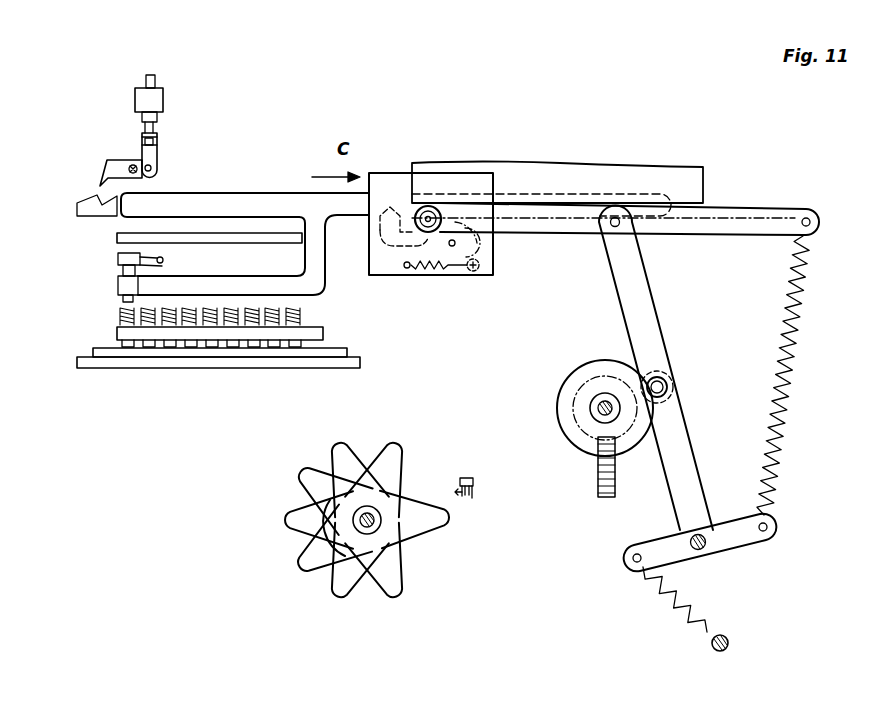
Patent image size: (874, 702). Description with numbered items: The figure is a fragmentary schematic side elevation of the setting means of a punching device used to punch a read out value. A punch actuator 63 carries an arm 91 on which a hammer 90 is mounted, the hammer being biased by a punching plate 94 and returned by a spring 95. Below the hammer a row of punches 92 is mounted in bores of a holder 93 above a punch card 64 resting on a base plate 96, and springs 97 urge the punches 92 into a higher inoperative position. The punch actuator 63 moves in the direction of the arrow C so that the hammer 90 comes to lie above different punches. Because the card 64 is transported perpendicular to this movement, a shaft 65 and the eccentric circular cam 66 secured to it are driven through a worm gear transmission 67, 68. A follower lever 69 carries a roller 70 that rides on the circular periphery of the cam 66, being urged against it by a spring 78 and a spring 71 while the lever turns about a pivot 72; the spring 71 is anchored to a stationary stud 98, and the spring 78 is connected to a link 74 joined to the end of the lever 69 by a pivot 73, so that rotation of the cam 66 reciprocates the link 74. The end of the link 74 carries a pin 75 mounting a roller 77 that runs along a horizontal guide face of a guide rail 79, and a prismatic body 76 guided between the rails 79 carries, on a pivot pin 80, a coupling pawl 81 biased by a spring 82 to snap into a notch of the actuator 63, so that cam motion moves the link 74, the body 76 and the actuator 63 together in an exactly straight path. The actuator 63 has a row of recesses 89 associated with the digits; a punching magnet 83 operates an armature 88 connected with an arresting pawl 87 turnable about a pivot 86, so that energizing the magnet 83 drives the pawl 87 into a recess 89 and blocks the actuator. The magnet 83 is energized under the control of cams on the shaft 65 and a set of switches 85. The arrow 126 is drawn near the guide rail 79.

The punch actuator 63 is at (293, 202).
The punch card 64 is at (307, 350).
The shaft 65 is at (358, 525).
The eccentric circular cam 66 is at (563, 425).
The worm gear transmission 67 is at (598, 492).
The worm gear transmission 68 is at (600, 380).
The follower lever 69 is at (673, 442).
The roller 70 is at (673, 380).
The spring 71 is at (683, 602).
The pivot 72 is at (707, 545).
The pivot 73 is at (624, 226).
The link 74 is at (780, 218).
The axle 75 is at (430, 218).
The prismatic body 76 is at (377, 183).
The roller 77 is at (417, 203).
The spring 78 is at (792, 335).
The guide rail 79 is at (695, 180).
The pivot pin 80 is at (450, 245).
The coupling pawl 81 is at (478, 255).
The spring 82 is at (453, 267).
The punching magnet 83 is at (150, 97).
The switch 85 is at (463, 478).
The pivot 86 is at (131, 166).
The arresting pawl 87 is at (107, 172).
The armature 88 is at (157, 157).
The recess 89 is at (97, 194).
The hammer 90 is at (120, 258).
The arm 91 is at (213, 282).
The punch 92 is at (170, 338).
The holder 93 is at (127, 331).
The punching plate 94 is at (187, 232).
The spring 95 is at (163, 266).
The base plate 96 is at (215, 357).
The spring 97 is at (120, 317).
The stationary stud 98 is at (728, 643).
The direction arrow 126 is at (700, 158).